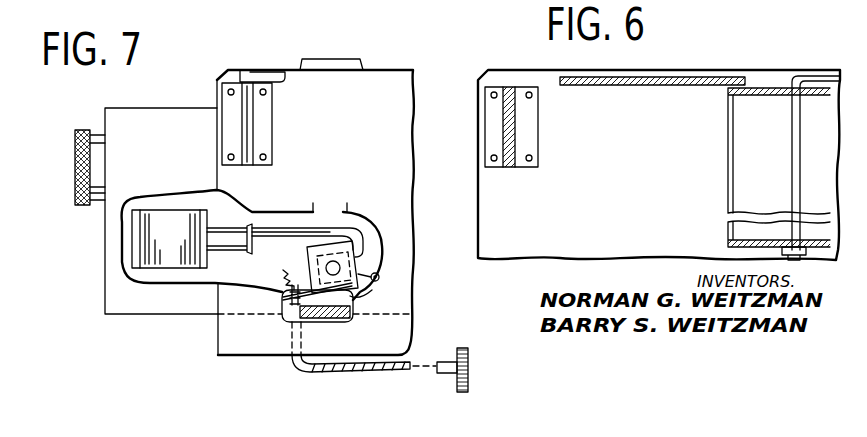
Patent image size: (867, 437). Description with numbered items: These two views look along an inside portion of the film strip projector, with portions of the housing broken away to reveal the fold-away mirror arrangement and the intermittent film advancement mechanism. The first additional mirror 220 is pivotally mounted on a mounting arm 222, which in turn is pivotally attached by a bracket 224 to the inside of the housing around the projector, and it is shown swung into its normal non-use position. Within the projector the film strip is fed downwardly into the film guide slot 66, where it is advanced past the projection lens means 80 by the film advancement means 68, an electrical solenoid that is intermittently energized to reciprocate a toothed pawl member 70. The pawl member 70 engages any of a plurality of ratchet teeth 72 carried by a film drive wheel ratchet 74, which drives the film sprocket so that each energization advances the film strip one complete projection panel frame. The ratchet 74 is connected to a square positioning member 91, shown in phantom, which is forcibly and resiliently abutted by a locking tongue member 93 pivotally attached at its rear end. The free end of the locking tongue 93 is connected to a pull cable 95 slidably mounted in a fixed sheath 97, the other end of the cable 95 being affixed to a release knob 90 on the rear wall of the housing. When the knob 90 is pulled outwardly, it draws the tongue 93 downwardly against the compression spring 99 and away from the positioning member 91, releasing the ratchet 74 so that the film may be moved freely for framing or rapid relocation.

In FIG. 7, the film guide slot 66 is at (357, 55).
In FIG. 7, the film advancement means 68 is at (170, 258).
In FIG. 7, the toothed pawl member 70 is at (372, 249).
In FIG. 7, the ratchet teeth 72 is at (367, 292).
In FIG. 7, the film drive wheel ratchet 74 is at (307, 263).
In FIG. 7, the projection lens means 80 is at (97, 215).
In FIG. 7, the release knob 90 is at (455, 376).
In FIG. 7, the square positioning member 91 is at (345, 260).
In FIG. 7, the locking tongue member 93 is at (286, 296).
In FIG. 7, the pull cable 95 is at (283, 271).
In FIG. 7, the fixed sheath 97 is at (338, 372).
In FIG. 7, the compression spring 99 is at (283, 304).
In FIG. 6, the first additional mirror 220 is at (740, 158).
In FIG. 7, the mounting arm 222 is at (268, 70).
In FIG. 6, the mounting arm 222 is at (665, 76).
In FIG. 7, the bracket 224 is at (267, 133).
In FIG. 6, the bracket 224 is at (520, 135).